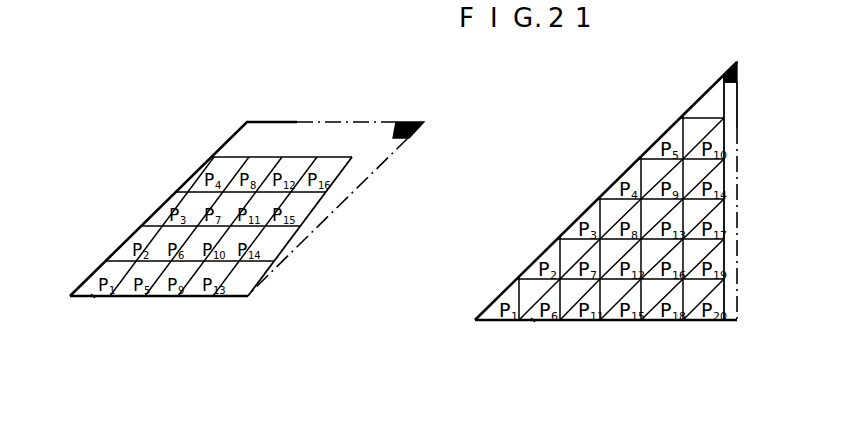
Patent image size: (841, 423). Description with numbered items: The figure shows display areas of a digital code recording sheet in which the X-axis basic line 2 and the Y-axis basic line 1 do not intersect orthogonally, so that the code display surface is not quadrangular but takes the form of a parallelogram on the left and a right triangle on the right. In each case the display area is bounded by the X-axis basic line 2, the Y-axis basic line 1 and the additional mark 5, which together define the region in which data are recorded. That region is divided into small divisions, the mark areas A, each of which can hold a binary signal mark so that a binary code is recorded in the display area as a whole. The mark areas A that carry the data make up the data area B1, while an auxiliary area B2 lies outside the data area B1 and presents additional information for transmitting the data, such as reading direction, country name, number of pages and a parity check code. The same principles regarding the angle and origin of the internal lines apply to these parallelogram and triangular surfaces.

The Y-axis basic line 1 is at (229, 139).
The X-axis basic line 2 is at (229, 297).
The additional mark 5 is at (424, 122).
The mark area A is at (93, 297).
The data area B1 is at (777, 200).
The auxiliary area B2 is at (381, 127).